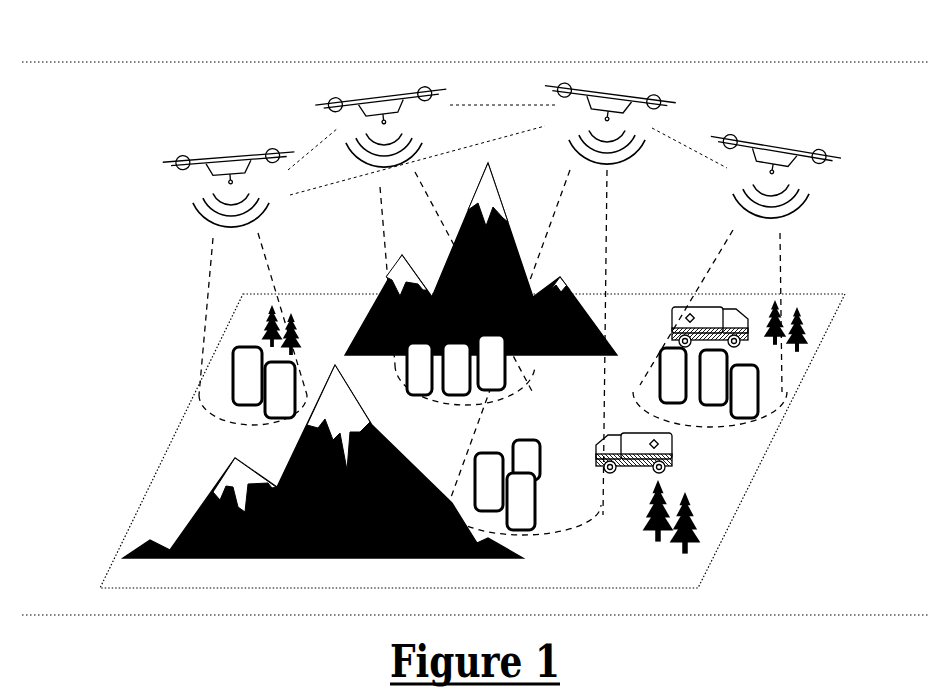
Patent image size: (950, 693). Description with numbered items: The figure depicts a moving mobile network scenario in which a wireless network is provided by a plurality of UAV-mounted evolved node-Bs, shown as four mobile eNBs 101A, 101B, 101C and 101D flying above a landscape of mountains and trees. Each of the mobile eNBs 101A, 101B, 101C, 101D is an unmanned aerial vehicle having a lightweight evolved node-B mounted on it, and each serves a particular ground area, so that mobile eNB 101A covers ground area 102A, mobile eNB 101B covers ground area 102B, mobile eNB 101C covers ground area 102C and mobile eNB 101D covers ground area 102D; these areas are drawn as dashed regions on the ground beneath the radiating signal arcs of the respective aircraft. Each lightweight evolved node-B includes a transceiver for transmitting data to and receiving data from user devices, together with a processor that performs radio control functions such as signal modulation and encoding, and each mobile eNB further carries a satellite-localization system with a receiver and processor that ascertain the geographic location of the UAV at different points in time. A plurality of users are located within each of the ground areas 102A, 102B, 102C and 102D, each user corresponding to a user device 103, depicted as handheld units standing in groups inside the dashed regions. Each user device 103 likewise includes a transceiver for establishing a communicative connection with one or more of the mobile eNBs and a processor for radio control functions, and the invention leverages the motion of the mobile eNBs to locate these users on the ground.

The mobile eNB 101A is at (228, 165).
The mobile eNB 101B is at (380, 102).
The mobile eNB 101C is at (610, 100).
The mobile eNB 101D is at (770, 153).
The ground area 102A is at (210, 402).
The ground area 102B is at (457, 407).
The ground area 102C is at (560, 527).
The ground area 102D is at (710, 420).
The user device 103 is at (275, 370).